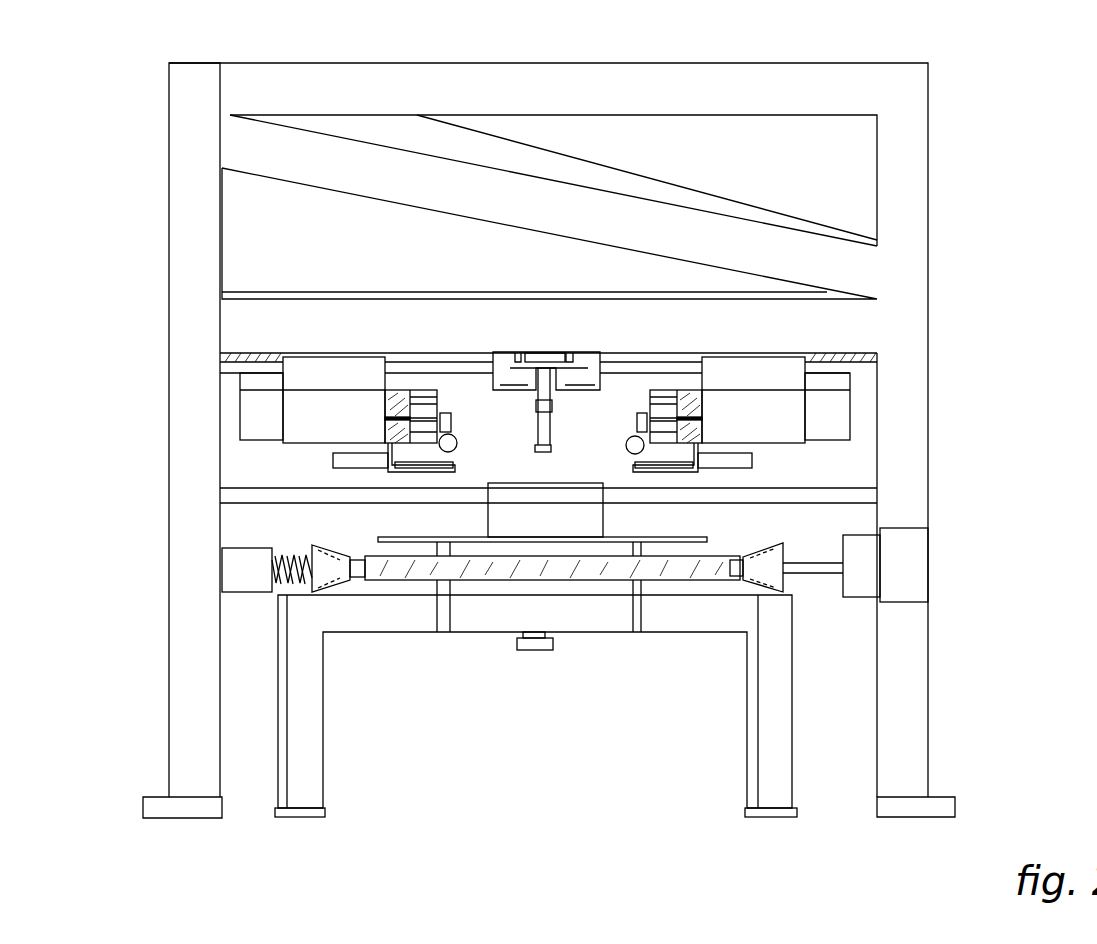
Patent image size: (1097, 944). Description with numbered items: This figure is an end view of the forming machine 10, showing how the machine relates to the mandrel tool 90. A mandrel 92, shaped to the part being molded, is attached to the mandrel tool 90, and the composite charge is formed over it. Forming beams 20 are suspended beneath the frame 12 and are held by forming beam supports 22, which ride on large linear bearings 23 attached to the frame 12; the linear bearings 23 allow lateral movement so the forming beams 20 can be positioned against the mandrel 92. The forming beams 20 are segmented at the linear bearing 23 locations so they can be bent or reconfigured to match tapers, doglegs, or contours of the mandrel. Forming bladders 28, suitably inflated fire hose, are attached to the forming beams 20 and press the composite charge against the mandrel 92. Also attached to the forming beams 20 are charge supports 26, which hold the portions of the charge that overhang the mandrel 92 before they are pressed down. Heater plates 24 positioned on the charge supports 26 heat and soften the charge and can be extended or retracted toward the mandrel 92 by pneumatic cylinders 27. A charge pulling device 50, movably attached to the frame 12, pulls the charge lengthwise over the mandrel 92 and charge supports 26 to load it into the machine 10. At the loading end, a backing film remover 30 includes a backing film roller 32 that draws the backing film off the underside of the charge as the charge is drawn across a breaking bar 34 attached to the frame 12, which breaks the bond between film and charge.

The forming machine 10 is at (567, 52).
The frame 12 is at (935, 132).
The forming beams 20 is at (400, 392).
The forming beam supports 22 is at (346, 365).
The linear bearings 23 is at (262, 356).
The heater plates 24 is at (458, 468).
The charge supports 26 is at (415, 473).
The pneumatic cylinders 27 is at (333, 460).
The forming bladders 28 is at (455, 440).
The backing film remover 30 is at (797, 546).
The backing film roller 32 is at (670, 582).
The breaking bar 34 is at (858, 487).
The charge pulling device 50 is at (528, 403).
The mandrel tool 90 is at (384, 758).
The mandrel 92 is at (482, 519).